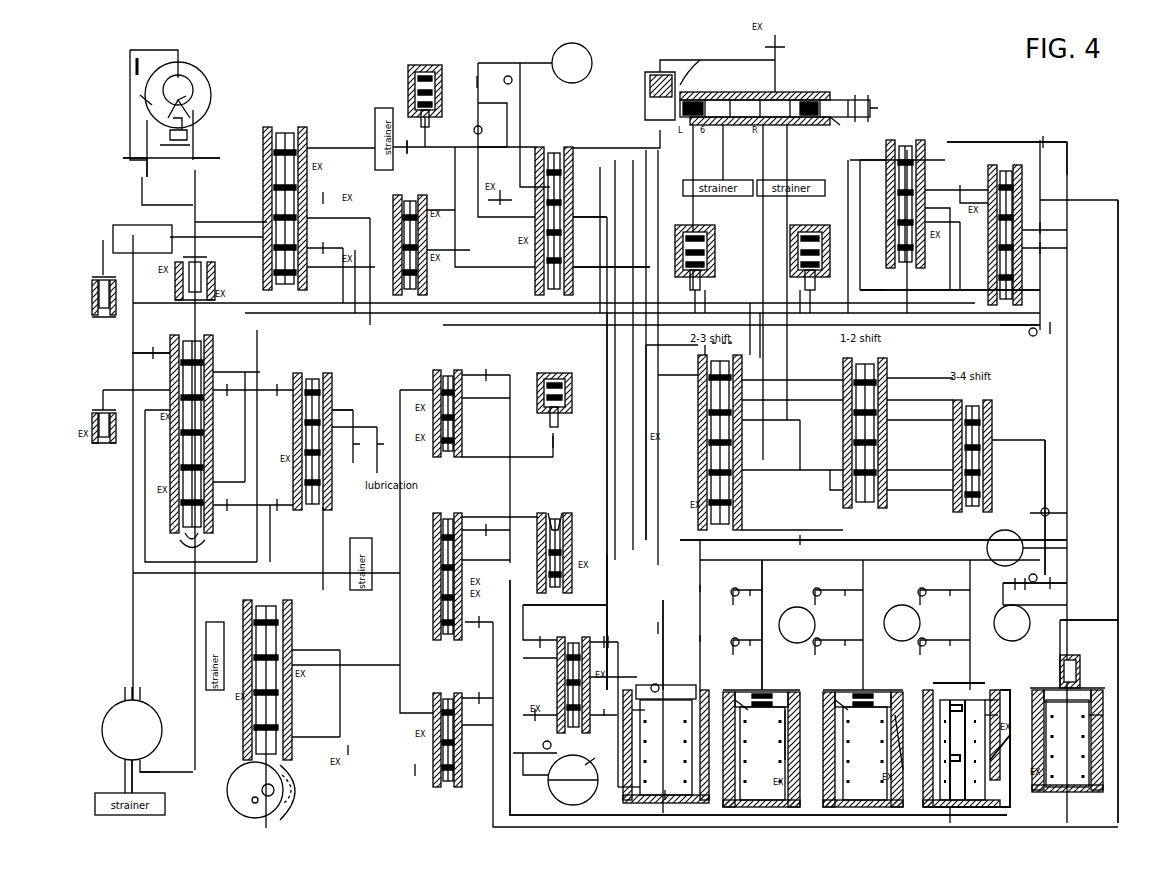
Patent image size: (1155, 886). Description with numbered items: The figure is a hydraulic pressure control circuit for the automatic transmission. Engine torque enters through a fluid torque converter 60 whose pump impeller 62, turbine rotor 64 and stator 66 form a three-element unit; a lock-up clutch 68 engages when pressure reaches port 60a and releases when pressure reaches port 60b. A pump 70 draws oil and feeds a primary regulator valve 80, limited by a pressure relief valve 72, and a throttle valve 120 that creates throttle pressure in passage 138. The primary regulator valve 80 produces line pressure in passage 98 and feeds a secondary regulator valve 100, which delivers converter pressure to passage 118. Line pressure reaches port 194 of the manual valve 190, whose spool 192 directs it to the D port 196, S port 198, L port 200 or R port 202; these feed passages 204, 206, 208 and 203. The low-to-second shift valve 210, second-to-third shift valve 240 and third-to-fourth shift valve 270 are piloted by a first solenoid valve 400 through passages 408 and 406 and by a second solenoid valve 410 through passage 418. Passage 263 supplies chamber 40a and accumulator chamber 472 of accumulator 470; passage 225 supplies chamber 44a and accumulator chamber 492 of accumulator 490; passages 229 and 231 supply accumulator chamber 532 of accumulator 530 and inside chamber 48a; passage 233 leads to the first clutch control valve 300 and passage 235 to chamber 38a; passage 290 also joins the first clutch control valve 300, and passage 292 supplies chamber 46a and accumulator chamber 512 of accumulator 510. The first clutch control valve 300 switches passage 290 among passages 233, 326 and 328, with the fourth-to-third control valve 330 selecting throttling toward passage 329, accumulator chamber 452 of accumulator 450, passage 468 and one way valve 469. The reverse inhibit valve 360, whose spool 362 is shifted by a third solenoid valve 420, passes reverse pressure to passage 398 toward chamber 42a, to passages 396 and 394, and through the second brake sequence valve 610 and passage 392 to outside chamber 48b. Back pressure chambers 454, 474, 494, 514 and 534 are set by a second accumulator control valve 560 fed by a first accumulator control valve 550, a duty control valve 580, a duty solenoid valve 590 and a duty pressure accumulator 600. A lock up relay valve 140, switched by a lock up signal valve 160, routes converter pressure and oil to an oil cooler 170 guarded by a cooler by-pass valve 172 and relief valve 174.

The fluid torque converter 60 is at (215, 80).
The pump impeller 62 is at (195, 70).
The turbine rotor 64 is at (148, 103).
The stator 66 is at (200, 112).
The lock-up clutch 68 is at (133, 67).
The port 60a is at (205, 163).
The port 60b is at (130, 165).
The pump 70 is at (118, 705).
The pressure relief valve 72 is at (104, 445).
The primary regulator valve 80 is at (200, 540).
The passage 98 is at (135, 343).
The secondary regulator valve 100 is at (305, 512).
The passage 118 is at (340, 405).
The throttle valve 120 is at (248, 758).
The passage 138 is at (345, 648).
The lock up relay valve 140 is at (298, 292).
The lock up signal valve 160 is at (410, 292).
The oil cooler 170 is at (130, 224).
The cooler by-pass valve 172 is at (175, 287).
The relief valve 174 is at (92, 296).
The manual valve 190 is at (822, 92).
The spool 192 is at (828, 122).
The port 194 is at (732, 142).
The D port 196 is at (700, 145).
The S port 198 is at (690, 78).
The L port 200 is at (640, 137).
The R port 202 is at (768, 125).
The passage 203 is at (787, 157).
The passage 204 is at (600, 265).
The passage 206 is at (680, 374).
The passage 208 is at (680, 354).
The 1-2 shift valve 210 is at (873, 510).
The passage 225 is at (920, 560).
The passage 229 is at (670, 605).
The passage 231 is at (640, 790).
The passage 233 is at (950, 262).
The passage 235 is at (1045, 402).
The 2-3 shift valve 240 is at (698, 523).
The passage 263 is at (762, 578).
The 3-4 shift valve 270 is at (965, 515).
The passage 290 is at (950, 318).
The passage 292 is at (1070, 512).
The C1 control valve 300 is at (913, 268).
The passage 326 is at (966, 193).
The passage 328 is at (1070, 160).
The passage 329 is at (1067, 358).
The 4-3 control valve 330 is at (1022, 280).
The reverse inhibit valve 360 is at (566, 292).
The spool 362 is at (575, 236).
The passage 392 is at (557, 685).
The passage 394 is at (607, 552).
The passage 396 is at (607, 502).
The passage 398 is at (478, 155).
The first solenoid valve 400 is at (683, 280).
The passage 406 is at (875, 158).
The passage 408 is at (770, 345).
The second solenoid valve 410 is at (820, 278).
The passage 418 is at (815, 370).
The third solenoid valve 420 is at (438, 110).
The hydraulic pressure chamber 42a is at (590, 60).
The hydraulic pressure chamber 38a is at (1020, 540).
The hydraulic pressure chamber 40a is at (795, 607).
The hydraulic pressure chamber 44a is at (900, 605).
The hydraulic pressure chamber 46a is at (1025, 640).
The inside hydraulic pressure chamber 48a is at (590, 795).
The outside hydraulic pressure chamber 48b is at (596, 753).
The accumulator 450 is at (1068, 792).
The accumulator chamber 452 is at (990, 702).
The back pressure chamber 454 is at (1105, 718).
The passage 468 is at (1070, 620).
The one way valve 469 is at (1070, 583).
The accumulator 470 is at (778, 690).
The accumulator chamber 472 is at (738, 700).
The back pressure chamber 474 is at (787, 712).
The accumulator 490 is at (878, 690).
The accumulator chamber 492 is at (840, 700).
The back pressure chamber 494 is at (905, 710).
The accumulator 510 is at (985, 678).
The accumulator chamber 512 is at (990, 716).
The back pressure chamber 514 is at (950, 810).
The accumulator 530 is at (660, 678).
The accumulator chamber 532 is at (678, 713).
The back pressure chamber 534 is at (675, 795).
The first accumulator control valve 550 is at (445, 790).
The second accumulator control valve 560 is at (450, 643).
The duty control valve 580 is at (450, 460).
The duty solenoid valve 590 is at (572, 416).
The duty pressure accumulator 600 is at (568, 596).
The B2 sequence valve 610 is at (600, 622).